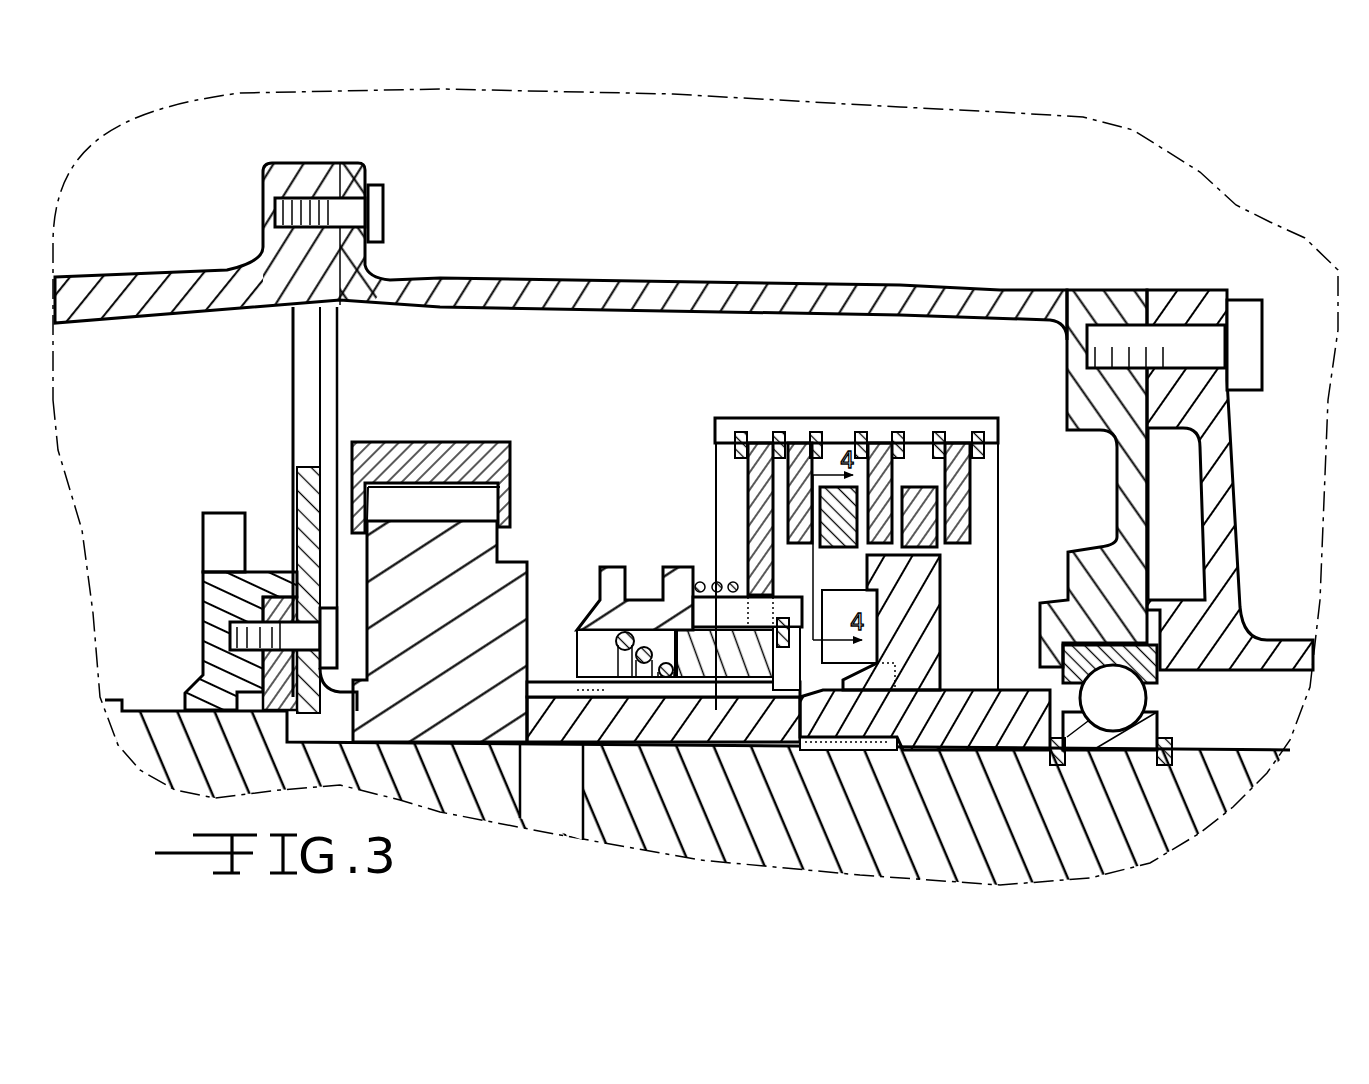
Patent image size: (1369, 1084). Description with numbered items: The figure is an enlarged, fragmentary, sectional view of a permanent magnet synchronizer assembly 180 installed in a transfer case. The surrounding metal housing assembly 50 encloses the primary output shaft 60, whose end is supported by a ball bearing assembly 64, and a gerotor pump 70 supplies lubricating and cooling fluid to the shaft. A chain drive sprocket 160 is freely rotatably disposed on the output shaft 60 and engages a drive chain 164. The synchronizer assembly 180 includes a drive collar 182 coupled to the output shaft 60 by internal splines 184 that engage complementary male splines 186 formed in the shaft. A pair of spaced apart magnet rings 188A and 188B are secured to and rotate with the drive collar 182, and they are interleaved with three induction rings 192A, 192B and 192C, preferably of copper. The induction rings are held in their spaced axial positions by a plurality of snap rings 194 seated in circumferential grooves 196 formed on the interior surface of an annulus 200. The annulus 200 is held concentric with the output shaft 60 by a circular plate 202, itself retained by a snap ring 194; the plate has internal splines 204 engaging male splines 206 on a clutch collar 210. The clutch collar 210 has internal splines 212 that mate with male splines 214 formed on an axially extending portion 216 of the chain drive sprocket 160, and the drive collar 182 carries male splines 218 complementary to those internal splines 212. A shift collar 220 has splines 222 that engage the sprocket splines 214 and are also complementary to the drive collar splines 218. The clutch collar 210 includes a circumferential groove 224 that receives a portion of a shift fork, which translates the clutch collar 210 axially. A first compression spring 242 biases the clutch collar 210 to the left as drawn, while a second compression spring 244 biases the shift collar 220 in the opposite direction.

The synchronizer assembly 180 is at (882, 210).
The housing assembly 50 is at (418, 280).
The primary output shaft 60 is at (1127, 838).
The ball bearing assembly 64 is at (1147, 697).
The gerotor pump 70 is at (215, 605).
The chain drive sprocket 160 is at (473, 565).
The drive chain 164 is at (440, 440).
The drive collar 182 is at (915, 605).
The internal splines or gear teeth 184 is at (852, 760).
The male splines or gear teeth 186 is at (793, 752).
The magnet ring 188A is at (843, 563).
The magnet ring 188B is at (917, 480).
The induction ring 192A is at (802, 463).
The induction ring 192B is at (877, 447).
The induction ring 192C is at (953, 457).
The snap rings 194 is at (740, 430).
The circumferential grooves or channels 196 is at (830, 457).
The annulus 200 is at (700, 420).
The circular plate 202 is at (762, 507).
The internal splines or gear teeth 204 is at (718, 750).
The male splines or gear teeth 206 is at (712, 615).
The clutch collar 210 is at (603, 617).
The internal splines or gear teeth 212 is at (577, 672).
The male splines or gear teeth 214 is at (537, 692).
The axially extending portion 216 is at (557, 742).
The male splines or gear teeth 218 is at (873, 687).
The shift collar 220 is at (752, 655).
The splines or gear teeth 222 is at (780, 745).
The circumferential groove or channel 224 is at (637, 567).
The first compression spring 242 is at (703, 580).
The second compression spring 244 is at (760, 607).